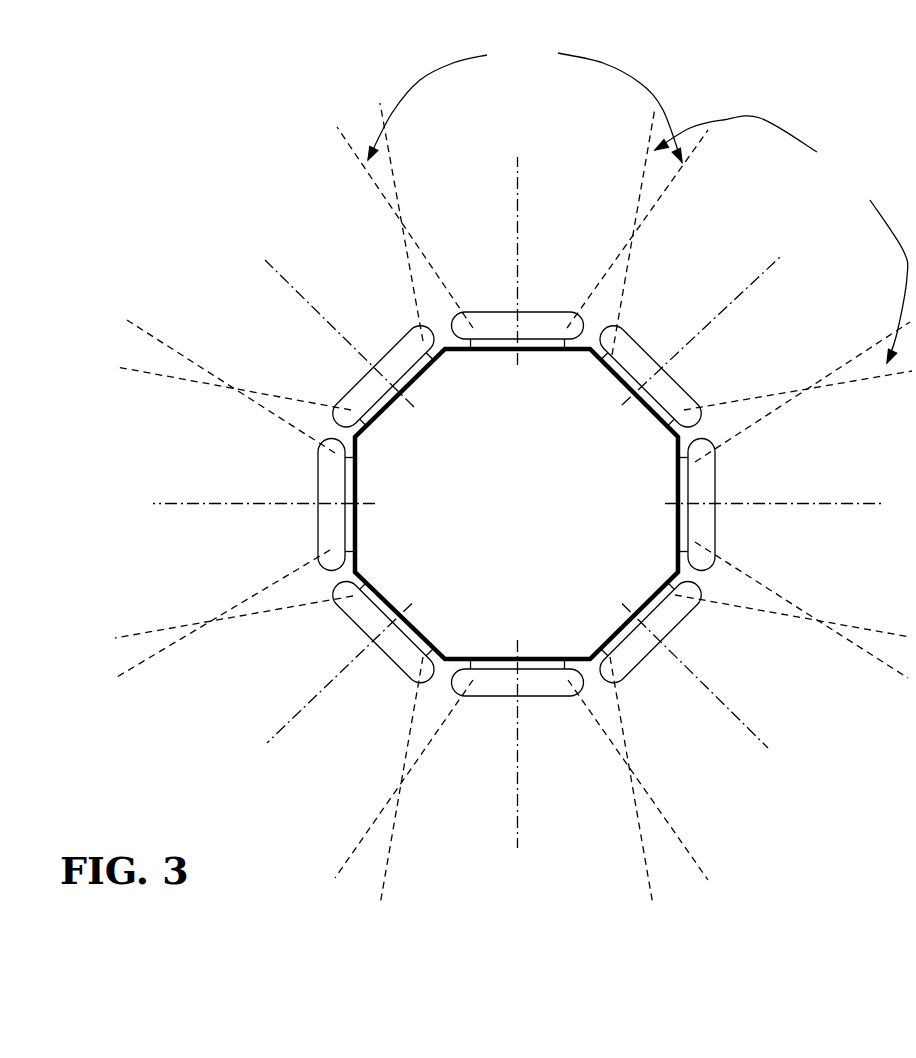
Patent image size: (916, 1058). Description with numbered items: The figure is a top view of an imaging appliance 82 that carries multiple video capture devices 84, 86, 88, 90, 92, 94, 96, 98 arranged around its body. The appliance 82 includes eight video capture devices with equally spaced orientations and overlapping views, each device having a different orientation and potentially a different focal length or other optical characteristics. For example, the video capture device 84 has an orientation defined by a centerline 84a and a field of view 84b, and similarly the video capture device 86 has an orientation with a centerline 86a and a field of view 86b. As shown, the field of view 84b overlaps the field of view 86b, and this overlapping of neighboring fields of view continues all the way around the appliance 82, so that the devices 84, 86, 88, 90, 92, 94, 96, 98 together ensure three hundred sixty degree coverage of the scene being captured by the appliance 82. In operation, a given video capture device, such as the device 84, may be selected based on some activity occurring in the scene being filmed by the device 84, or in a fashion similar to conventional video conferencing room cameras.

The imaging appliance 82 is at (531, 516).
The video capture device 84 is at (550, 275).
The centerline 84a is at (522, 247).
The field of view 84b is at (522, 184).
The video capture device 86 is at (658, 325).
The centerline 86a is at (714, 307).
The field of view 86b is at (762, 259).
The video capture device 88 is at (751, 482).
The video capture device 90 is at (703, 643).
The video capture device 92 is at (558, 718).
The video capture device 94 is at (378, 670).
The video capture device 96 is at (298, 533).
The video capture device 98 is at (378, 336).